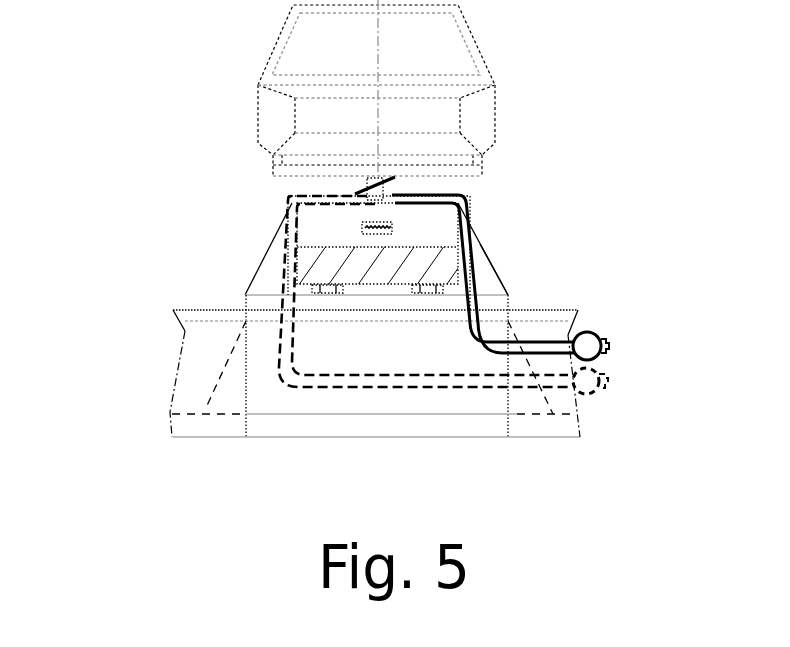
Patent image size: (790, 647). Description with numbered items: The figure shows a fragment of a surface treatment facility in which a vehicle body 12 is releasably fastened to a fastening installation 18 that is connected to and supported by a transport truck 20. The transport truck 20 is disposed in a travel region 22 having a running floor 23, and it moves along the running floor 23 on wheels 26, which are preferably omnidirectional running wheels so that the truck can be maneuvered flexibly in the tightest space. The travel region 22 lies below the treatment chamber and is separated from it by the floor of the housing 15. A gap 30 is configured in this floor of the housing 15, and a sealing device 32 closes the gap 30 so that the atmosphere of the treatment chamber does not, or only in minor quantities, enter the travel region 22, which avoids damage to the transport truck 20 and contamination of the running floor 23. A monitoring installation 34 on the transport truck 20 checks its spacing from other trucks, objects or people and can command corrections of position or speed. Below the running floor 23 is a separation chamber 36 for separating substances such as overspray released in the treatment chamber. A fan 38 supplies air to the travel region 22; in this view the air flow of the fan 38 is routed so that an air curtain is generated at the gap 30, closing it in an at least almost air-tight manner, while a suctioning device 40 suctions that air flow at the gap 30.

The vehicle body 12 is at (472, 33).
The housing 15 is at (484, 263).
The fastening installation 18 is at (418, 191).
The transport truck 20 is at (369, 287).
The travel region 22 is at (483, 281).
The running floor 23 is at (275, 297).
The wheels 26 is at (327, 294).
The gap 30 is at (404, 205).
The sealing device 32 is at (365, 192).
The monitoring installation 34 is at (361, 227).
The separation chamber 36 is at (158, 383).
The fan 38 is at (594, 333).
The suctioning device 40 is at (594, 370).